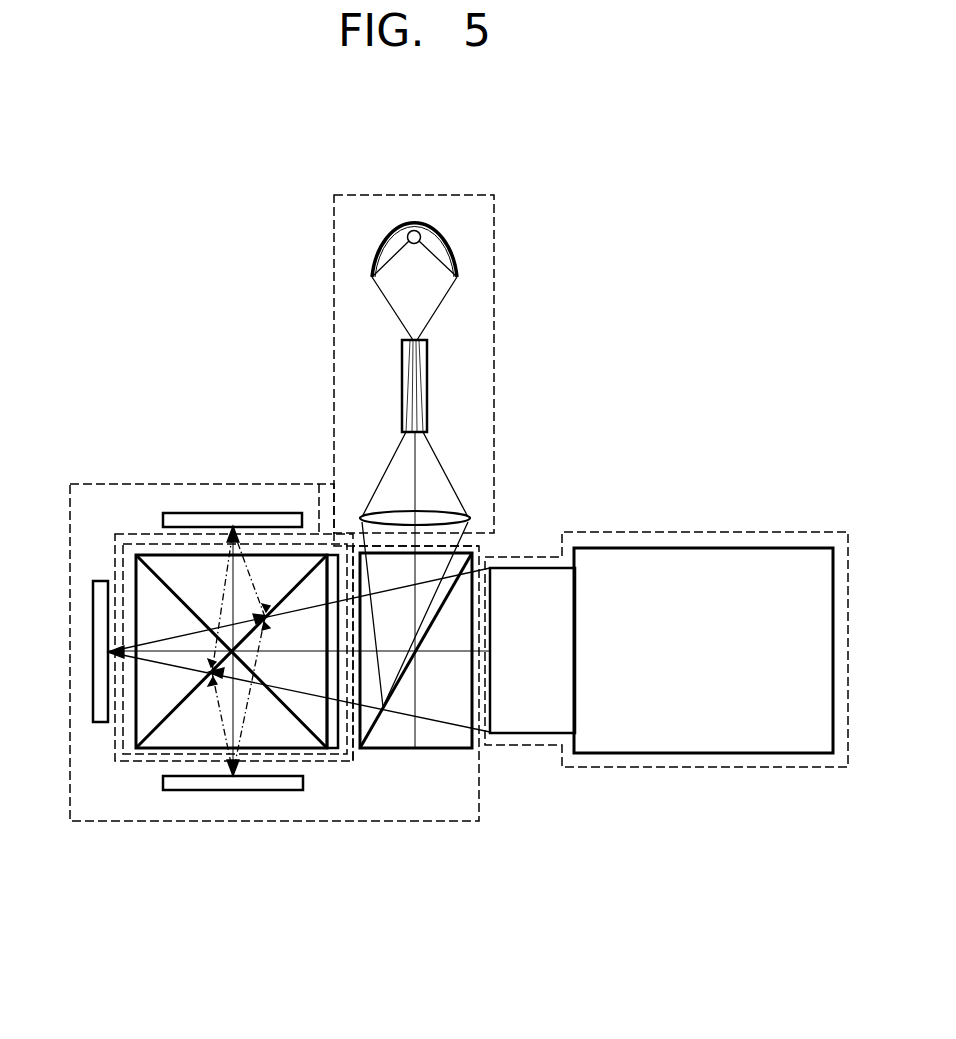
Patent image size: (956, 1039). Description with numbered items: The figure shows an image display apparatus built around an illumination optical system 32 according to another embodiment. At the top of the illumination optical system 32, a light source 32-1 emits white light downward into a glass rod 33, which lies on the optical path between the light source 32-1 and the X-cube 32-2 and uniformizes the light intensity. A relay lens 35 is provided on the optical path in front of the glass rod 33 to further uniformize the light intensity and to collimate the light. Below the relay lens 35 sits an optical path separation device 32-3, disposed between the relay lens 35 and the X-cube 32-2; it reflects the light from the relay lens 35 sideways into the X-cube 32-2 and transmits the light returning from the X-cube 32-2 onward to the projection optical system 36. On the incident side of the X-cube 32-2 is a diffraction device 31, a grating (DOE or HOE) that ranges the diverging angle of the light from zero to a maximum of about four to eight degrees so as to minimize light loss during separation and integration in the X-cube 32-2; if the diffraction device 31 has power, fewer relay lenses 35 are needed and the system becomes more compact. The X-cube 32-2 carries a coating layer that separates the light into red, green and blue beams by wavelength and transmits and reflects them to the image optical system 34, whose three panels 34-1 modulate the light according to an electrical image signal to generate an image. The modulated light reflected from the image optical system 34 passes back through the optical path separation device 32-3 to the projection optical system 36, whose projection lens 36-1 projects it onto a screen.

The diffraction device 31 is at (342, 727).
The illumination optical system 32 is at (415, 195).
The light source 32-1 is at (462, 252).
The X-cube 32-2 is at (157, 553).
The optical path separation device 32-3 is at (438, 748).
The glass rod 33 is at (428, 387).
The image optical system 34 is at (283, 822).
The panel 34-1 is at (216, 513).
The relay lens 35 is at (442, 512).
The projection optical system 36 is at (705, 532).
The projection lens 36-1 is at (698, 753).